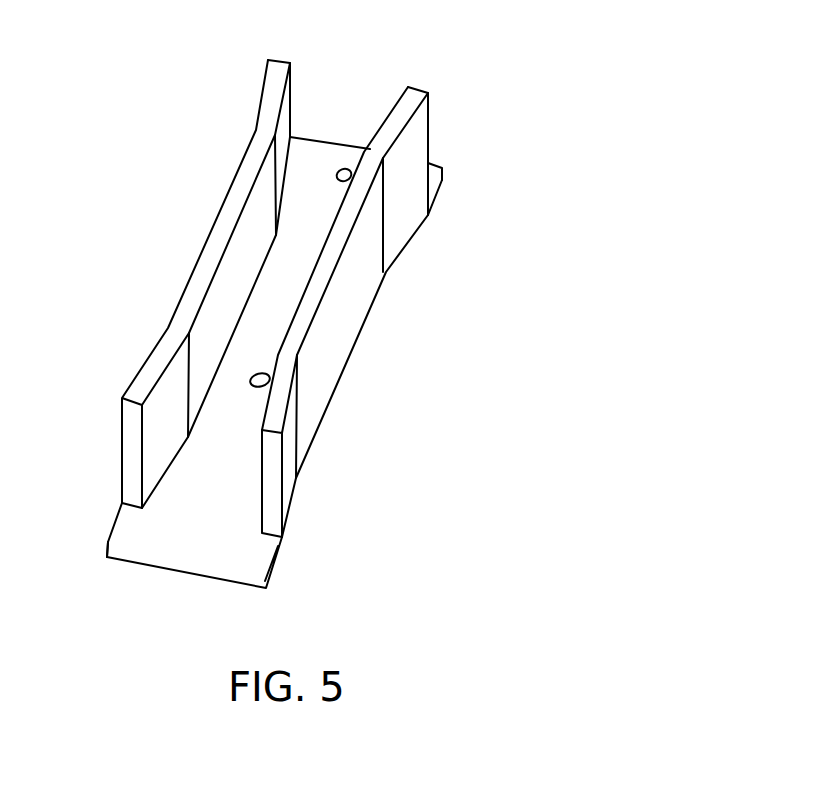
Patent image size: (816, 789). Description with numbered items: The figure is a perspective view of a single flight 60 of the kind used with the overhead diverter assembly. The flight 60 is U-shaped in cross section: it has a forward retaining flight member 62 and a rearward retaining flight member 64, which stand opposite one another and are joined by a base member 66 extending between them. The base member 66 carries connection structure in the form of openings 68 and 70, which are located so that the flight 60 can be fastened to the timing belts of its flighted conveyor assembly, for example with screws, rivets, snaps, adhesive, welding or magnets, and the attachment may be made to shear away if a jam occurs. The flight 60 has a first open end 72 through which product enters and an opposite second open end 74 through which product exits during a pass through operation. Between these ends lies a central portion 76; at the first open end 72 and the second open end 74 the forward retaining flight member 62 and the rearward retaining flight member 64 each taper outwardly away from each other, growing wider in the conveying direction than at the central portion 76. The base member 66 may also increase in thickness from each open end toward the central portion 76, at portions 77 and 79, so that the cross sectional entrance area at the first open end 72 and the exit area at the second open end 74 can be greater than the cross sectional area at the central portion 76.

The flight 60 is at (152, 168).
The forward retaining flight member 62 is at (362, 297).
The rearward retaining flight member 64 is at (203, 247).
The base member 66 is at (248, 338).
The opening 68 is at (256, 387).
The opening 70 is at (348, 166).
The first open end 72 is at (127, 575).
The second open end 74 is at (363, 85).
The central portion 76 is at (383, 377).
The portion 77 is at (203, 567).
The portion 79 is at (322, 137).